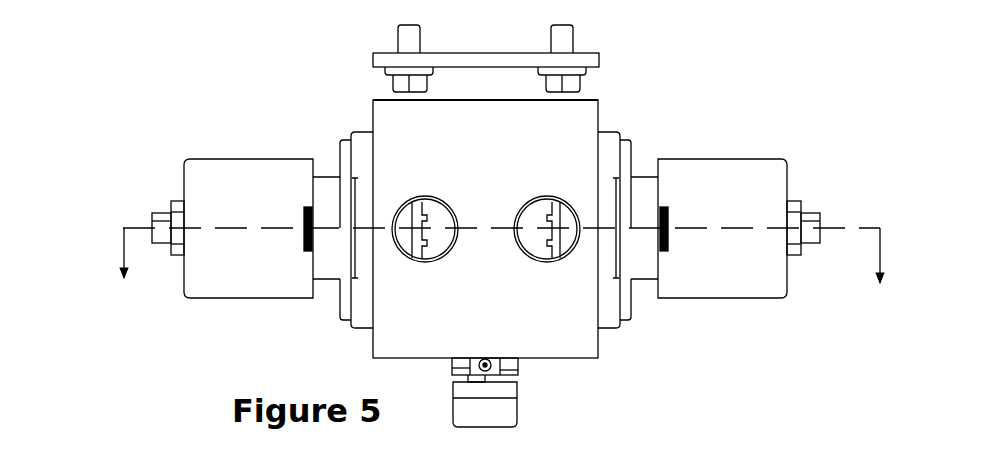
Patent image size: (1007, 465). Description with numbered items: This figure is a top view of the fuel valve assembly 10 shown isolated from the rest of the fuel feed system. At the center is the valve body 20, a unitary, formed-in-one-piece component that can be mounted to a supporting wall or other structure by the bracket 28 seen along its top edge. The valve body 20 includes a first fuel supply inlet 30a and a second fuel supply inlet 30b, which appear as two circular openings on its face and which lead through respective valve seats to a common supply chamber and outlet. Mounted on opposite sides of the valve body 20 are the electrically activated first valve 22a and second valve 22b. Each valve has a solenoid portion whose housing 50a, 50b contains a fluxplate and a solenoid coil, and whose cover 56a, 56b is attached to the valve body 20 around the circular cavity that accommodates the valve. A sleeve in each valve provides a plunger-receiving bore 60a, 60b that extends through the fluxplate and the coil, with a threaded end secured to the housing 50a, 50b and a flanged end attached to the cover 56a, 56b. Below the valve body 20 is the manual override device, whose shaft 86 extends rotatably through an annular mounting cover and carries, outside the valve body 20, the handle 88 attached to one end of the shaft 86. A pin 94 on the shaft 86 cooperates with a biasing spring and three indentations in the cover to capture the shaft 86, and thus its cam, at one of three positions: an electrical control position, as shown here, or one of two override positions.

The fuel valve assembly 10 is at (695, 108).
The valve body 20 is at (404, 324).
The first valve 22a is at (766, 234).
The second valve 22b is at (221, 210).
The bracket 28 is at (476, 67).
The first fuel supply inlet 30a is at (532, 215).
The second fuel supply inlet 30b is at (438, 218).
The housing 50a is at (705, 287).
The housing 50b is at (238, 285).
The cover 56a is at (607, 140).
The cover 56b is at (355, 142).
The plunger-receiving bore 60a is at (803, 220).
The plunger-receiving bore 60b is at (153, 217).
The shaft 86 is at (498, 368).
The handle 88 is at (507, 410).
The pin 94 is at (477, 363).